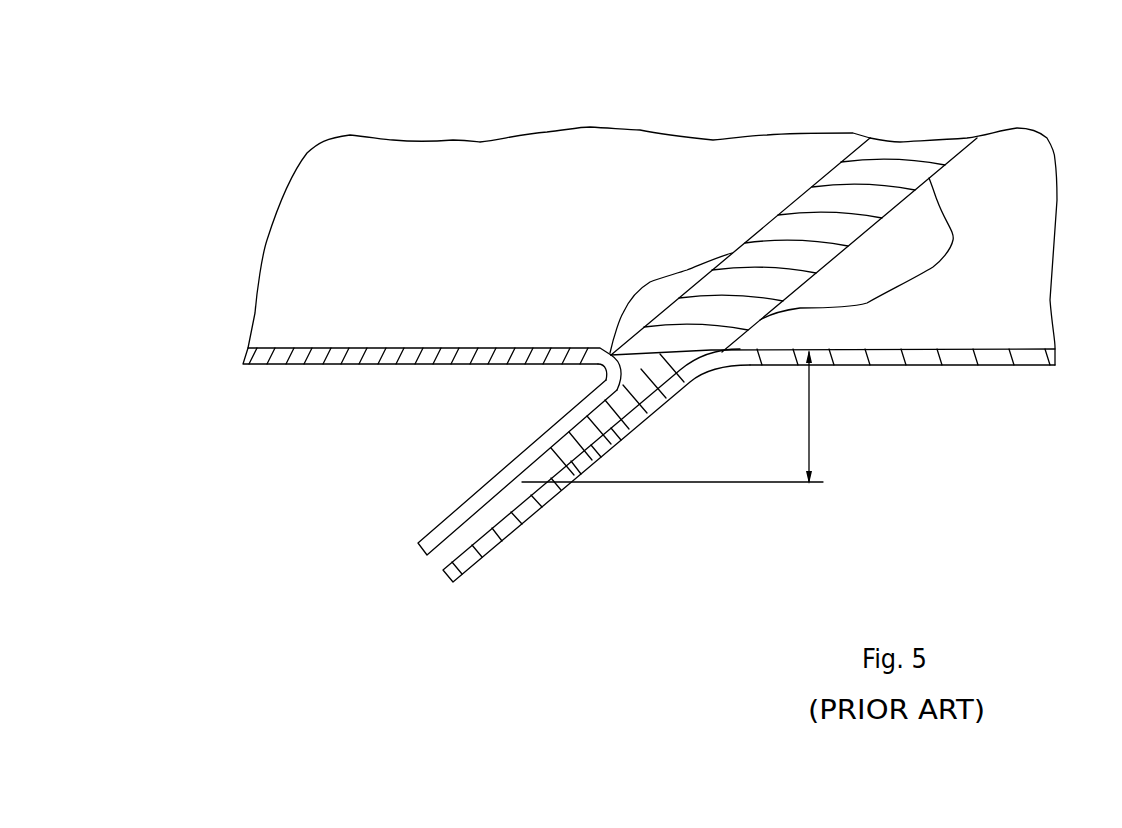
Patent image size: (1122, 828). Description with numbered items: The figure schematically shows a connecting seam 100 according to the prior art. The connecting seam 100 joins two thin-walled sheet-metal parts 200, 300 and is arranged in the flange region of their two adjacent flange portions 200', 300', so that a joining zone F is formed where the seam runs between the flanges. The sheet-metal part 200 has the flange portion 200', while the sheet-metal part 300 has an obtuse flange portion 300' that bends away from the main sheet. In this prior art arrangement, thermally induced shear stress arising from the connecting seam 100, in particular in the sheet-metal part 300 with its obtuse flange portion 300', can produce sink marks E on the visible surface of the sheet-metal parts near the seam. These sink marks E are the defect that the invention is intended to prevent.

The sheet-metal part 200 is at (556, 218).
The flange portion 200' is at (459, 471).
The sheet-metal part 300 is at (834, 208).
The obtuse flange portion 300' is at (562, 512).
The connecting seam 100 is at (908, 155).
The sink marks E is at (652, 295).
The joining zone F is at (812, 425).